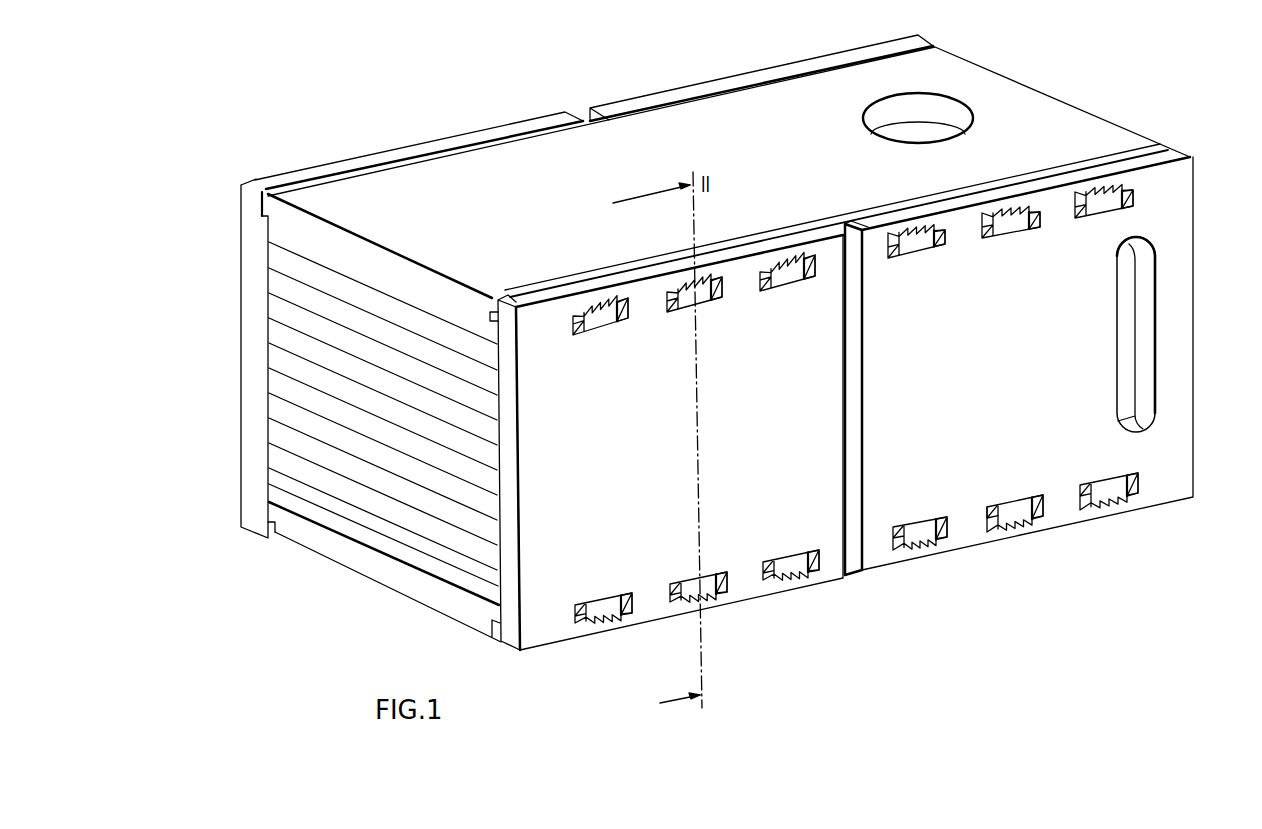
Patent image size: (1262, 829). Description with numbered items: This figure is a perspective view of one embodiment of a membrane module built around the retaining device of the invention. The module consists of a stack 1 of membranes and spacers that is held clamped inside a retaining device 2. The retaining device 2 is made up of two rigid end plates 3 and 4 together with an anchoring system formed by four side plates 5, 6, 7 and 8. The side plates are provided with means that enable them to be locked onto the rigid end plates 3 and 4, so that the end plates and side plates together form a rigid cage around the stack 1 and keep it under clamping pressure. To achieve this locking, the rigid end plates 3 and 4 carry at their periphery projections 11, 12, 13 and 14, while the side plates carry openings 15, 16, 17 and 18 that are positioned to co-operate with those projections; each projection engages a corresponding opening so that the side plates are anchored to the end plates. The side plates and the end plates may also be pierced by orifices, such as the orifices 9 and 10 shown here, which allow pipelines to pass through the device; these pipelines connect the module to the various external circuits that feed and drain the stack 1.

The stack 1 is at (376, 396).
The retaining device 2 is at (418, 200).
The rigid end plate 3 is at (355, 263).
The rigid end plate 4 is at (367, 558).
The side plate 5 is at (808, 462).
The side plate 6 is at (803, 70).
The side plate 7 is at (437, 148).
The side plate 8 is at (1036, 412).
The orifice 9 is at (923, 133).
The orifice 10 is at (1128, 328).
The projection 11 is at (1012, 212).
The projection 12 is at (683, 297).
The projection 13 is at (1018, 508).
The projection 14 is at (697, 588).
The opening 15 is at (1042, 222).
The opening 16 is at (725, 280).
The opening 17 is at (988, 521).
The opening 18 is at (727, 588).